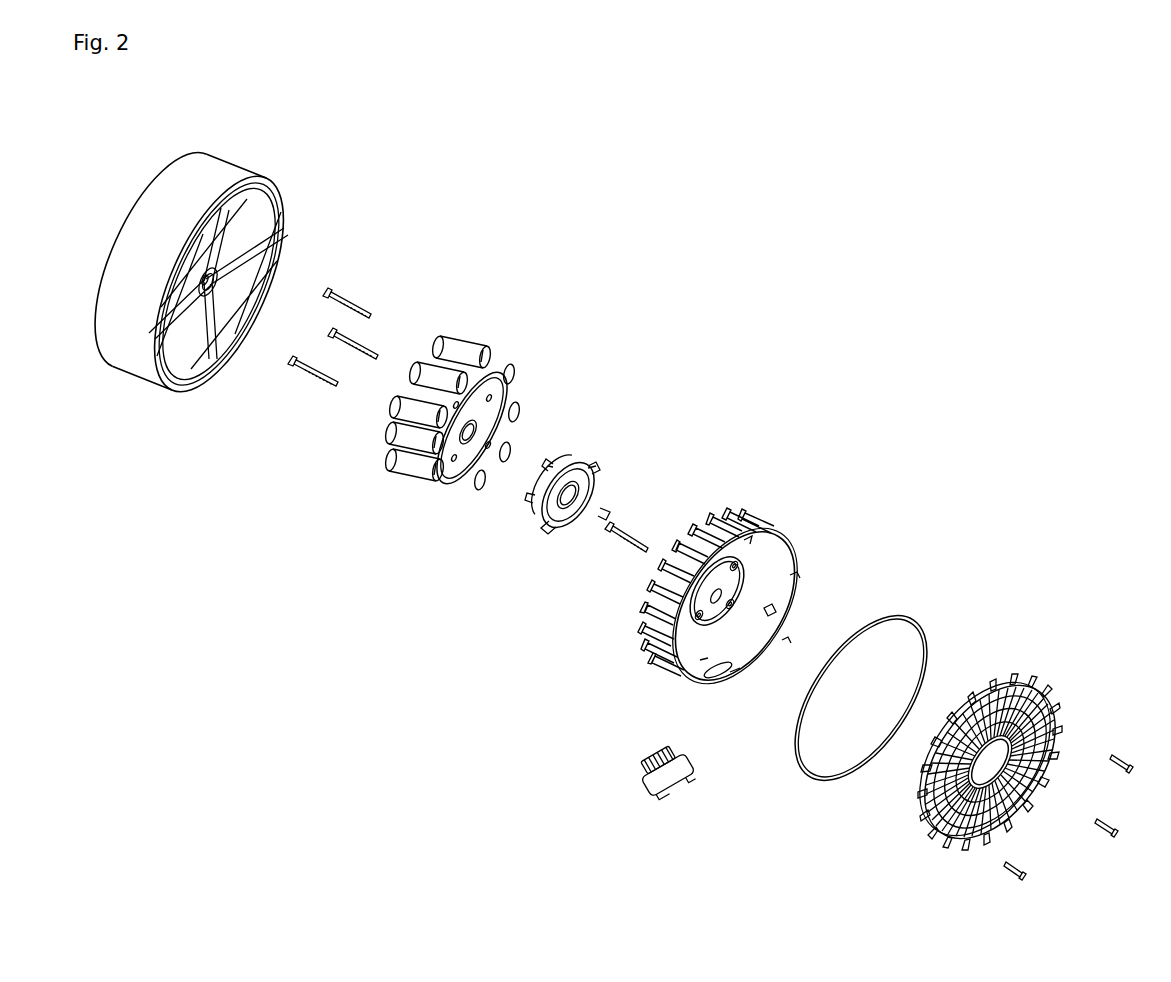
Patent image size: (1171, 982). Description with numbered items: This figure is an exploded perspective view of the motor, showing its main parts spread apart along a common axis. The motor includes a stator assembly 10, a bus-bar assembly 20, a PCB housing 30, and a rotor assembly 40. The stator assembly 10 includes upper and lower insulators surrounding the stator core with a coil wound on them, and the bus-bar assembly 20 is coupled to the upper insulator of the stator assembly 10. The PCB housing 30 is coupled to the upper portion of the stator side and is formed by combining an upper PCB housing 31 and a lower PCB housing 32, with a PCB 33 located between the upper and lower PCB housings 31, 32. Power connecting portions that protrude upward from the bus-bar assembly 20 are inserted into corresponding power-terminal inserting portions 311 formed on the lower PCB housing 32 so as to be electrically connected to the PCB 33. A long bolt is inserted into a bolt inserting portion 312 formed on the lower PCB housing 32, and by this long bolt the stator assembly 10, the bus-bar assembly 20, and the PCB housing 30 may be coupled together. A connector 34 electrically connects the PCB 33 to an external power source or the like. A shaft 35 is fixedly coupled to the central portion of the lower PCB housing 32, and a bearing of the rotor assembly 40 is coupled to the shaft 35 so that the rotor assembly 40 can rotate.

The stator assembly 10 is at (498, 333).
The bus-bar assembly 20 is at (590, 441).
The PCB housing 30 is at (860, 647).
The upper PCB housing 31 is at (987, 734).
The lower PCB housing 32 is at (790, 515).
The power-terminal inserting portions 311 is at (752, 573).
The bolt inserting portion 312 is at (712, 520).
The PCB 33 is at (893, 627).
The connector 34 is at (687, 787).
The shaft 35 is at (622, 545).
The rotor assembly 40 is at (258, 138).